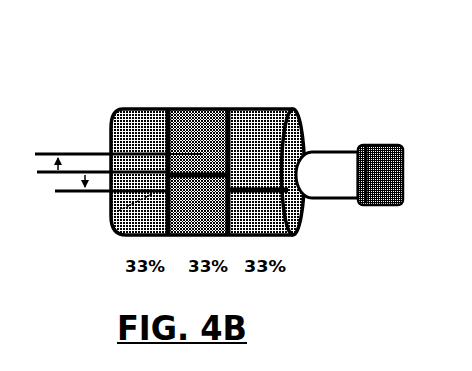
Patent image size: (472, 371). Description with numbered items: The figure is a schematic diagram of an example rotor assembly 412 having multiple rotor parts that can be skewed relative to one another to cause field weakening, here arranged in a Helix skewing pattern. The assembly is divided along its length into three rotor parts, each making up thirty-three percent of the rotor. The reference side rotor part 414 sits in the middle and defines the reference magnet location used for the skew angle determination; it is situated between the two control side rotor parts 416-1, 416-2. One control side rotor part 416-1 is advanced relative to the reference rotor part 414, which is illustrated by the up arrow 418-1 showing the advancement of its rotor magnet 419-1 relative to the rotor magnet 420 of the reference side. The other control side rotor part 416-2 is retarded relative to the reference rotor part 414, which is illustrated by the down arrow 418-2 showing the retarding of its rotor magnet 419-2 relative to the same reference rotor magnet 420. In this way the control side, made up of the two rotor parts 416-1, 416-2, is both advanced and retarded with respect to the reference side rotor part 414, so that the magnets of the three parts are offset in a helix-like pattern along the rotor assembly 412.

The rotor assembly 412 is at (201, 154).
The reference side rotor part 414 is at (208, 106).
The rotor part 416-1 is at (164, 106).
The rotor part 416-2 is at (272, 106).
The up arrow 418-1 is at (42, 146).
The down arrow 418-2 is at (67, 182).
The rotor magnet 419-1 is at (112, 134).
The rotor magnet 419-2 is at (290, 207).
The rotor magnet 420 is at (112, 220).